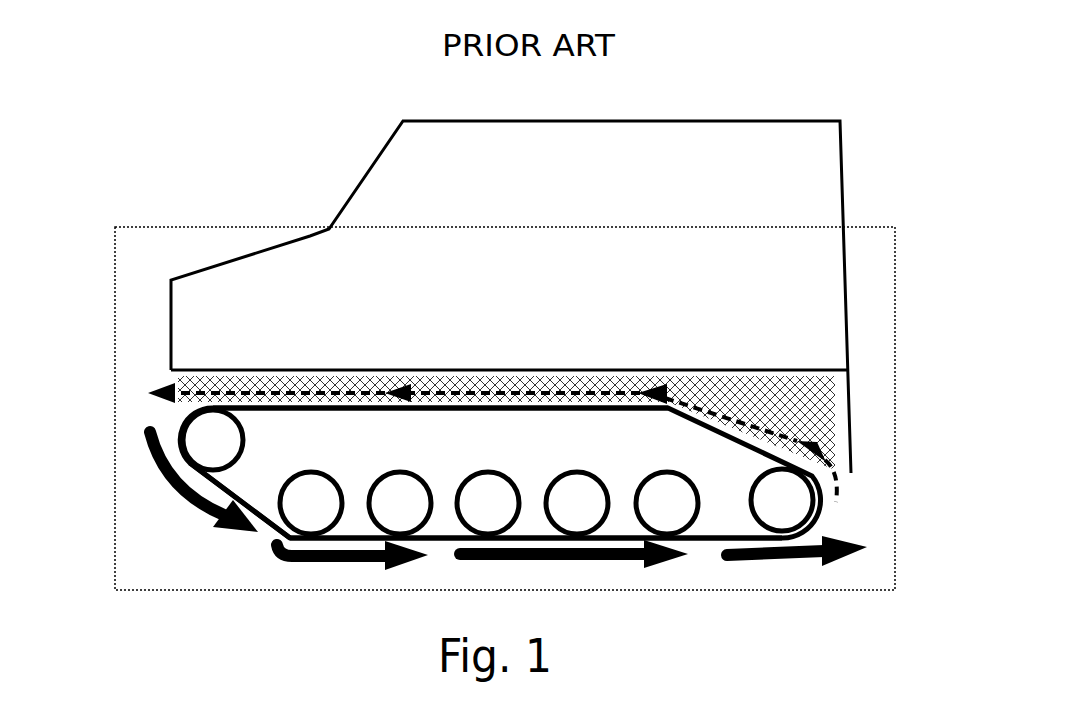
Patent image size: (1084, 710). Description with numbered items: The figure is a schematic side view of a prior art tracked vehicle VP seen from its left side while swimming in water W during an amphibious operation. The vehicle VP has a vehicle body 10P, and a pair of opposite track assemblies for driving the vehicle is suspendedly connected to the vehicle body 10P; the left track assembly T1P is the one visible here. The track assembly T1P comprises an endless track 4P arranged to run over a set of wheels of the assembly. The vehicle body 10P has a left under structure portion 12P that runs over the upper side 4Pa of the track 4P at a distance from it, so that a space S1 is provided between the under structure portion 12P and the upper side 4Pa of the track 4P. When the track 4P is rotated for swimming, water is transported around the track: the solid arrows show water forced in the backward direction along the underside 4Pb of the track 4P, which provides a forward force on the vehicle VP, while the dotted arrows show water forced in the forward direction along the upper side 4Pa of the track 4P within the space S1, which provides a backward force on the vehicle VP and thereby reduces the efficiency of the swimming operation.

The tracked vehicle VP is at (499, 348).
The vehicle body 10P is at (436, 116).
The endless track 4P is at (508, 489).
The upper side of the track 4Pa is at (345, 406).
The underside of the track 4Pb is at (447, 545).
The space S1 is at (790, 401).
The left under structure portion 12P is at (184, 378).
The left track assembly T1P is at (263, 524).
The water W is at (898, 412).